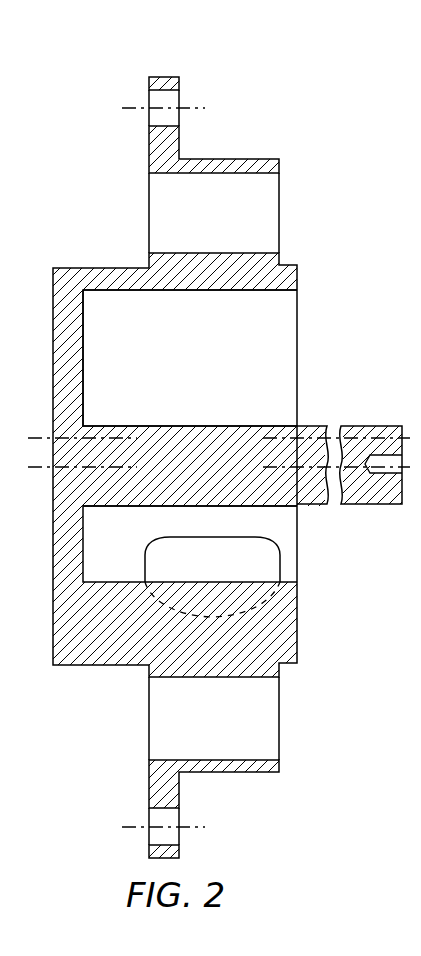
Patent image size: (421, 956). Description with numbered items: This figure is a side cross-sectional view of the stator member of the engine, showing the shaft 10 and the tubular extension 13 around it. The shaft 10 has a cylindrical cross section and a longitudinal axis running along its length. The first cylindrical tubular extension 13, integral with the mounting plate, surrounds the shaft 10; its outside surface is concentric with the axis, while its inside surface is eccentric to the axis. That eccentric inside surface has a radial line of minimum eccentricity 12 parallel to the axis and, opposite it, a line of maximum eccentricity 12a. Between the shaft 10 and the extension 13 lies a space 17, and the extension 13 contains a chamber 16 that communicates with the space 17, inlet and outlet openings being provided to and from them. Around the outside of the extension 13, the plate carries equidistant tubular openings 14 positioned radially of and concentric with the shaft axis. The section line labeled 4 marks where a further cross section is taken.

The section line 4- 4 is at (108, 235).
The shaft 10 is at (237, 440).
The line of minimum eccentricity 12 is at (163, 580).
The line of maximum eccentricity 12a is at (177, 290).
The first cylindrical tubular extension 13 is at (257, 270).
The tubular openings 14 is at (200, 467).
The chamber 16 is at (253, 563).
The space 17 is at (203, 378).